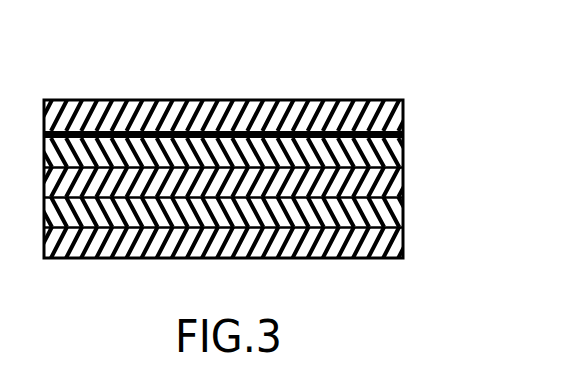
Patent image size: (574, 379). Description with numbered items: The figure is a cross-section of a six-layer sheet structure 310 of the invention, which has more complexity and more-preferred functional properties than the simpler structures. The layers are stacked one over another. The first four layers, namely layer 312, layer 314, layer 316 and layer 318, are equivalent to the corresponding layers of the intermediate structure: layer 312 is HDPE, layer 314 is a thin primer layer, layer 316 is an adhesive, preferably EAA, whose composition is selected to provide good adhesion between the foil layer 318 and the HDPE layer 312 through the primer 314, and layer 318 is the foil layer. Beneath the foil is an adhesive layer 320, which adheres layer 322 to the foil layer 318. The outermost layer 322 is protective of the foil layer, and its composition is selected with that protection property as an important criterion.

The sheet structure 310 is at (183, 84).
The HDPE layer 312 is at (397, 110).
The primer layer 314 is at (402, 134).
The adhesive layer 316 is at (397, 159).
The foil layer 318 is at (393, 183).
The adhesive layer 320 is at (393, 214).
The protective layer 322 is at (395, 244).